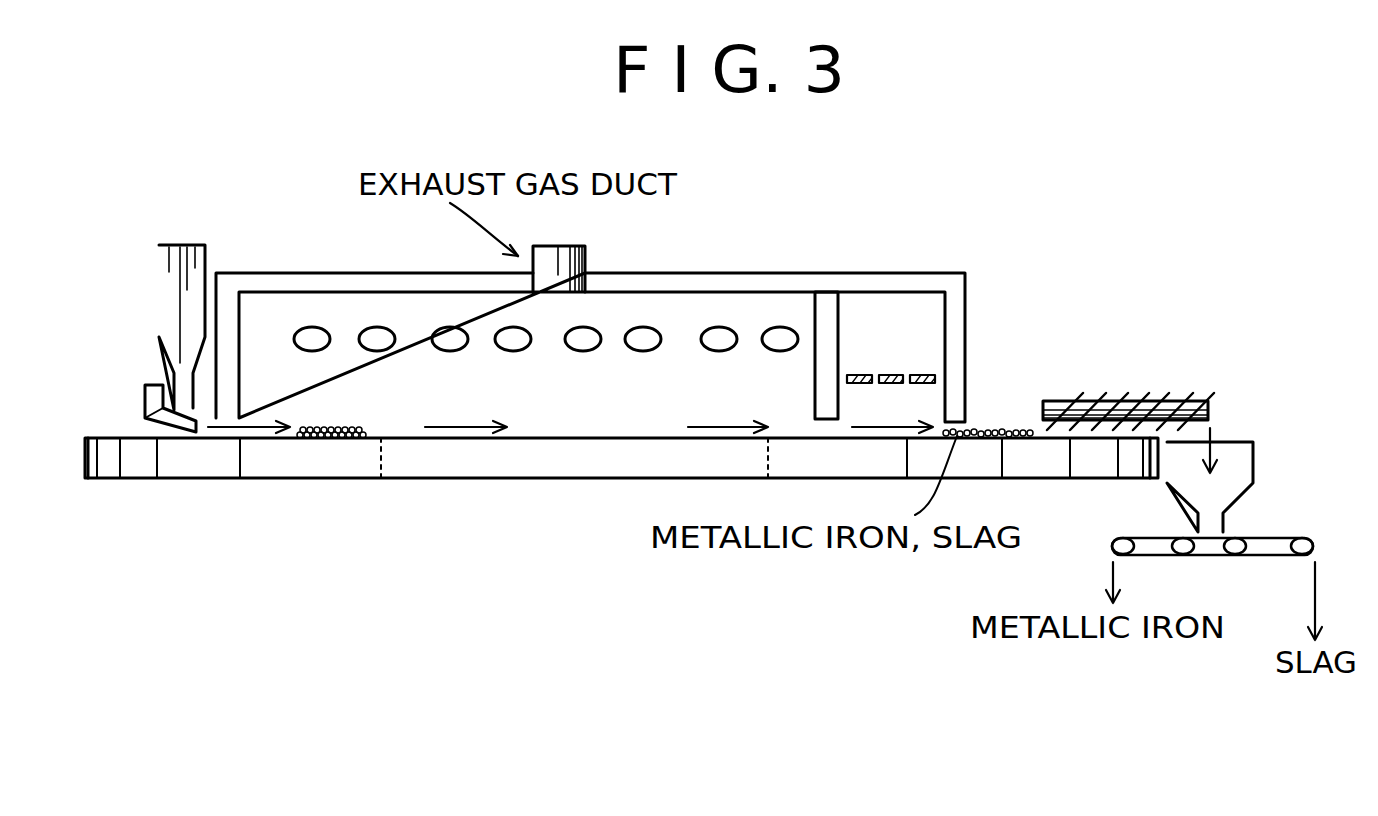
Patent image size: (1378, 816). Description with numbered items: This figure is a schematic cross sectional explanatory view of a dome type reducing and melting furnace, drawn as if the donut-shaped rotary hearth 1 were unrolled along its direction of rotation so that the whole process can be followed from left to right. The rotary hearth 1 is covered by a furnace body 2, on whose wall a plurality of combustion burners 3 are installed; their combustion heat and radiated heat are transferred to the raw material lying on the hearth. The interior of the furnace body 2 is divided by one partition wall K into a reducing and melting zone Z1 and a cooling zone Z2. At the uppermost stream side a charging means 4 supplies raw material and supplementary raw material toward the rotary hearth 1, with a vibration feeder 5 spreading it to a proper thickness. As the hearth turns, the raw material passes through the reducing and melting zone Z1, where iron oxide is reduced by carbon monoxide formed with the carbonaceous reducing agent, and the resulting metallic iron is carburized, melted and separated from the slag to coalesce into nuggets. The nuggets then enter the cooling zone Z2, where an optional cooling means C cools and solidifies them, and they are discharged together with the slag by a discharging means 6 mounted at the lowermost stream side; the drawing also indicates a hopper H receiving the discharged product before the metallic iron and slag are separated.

The rotary hearth 1 is at (293, 460).
The furnace body 2 is at (661, 287).
The combustion burners 3 is at (377, 345).
The charging means 4 is at (157, 293).
The vibration feeder 5 is at (150, 400).
The discharging means 6 is at (1148, 379).
The partition wall K is at (826, 300).
The reducing and melting zone Z1 is at (563, 428).
The cooling zone Z2 is at (895, 313).
The cooling means C is at (895, 375).
The discharge hopper H is at (1243, 462).